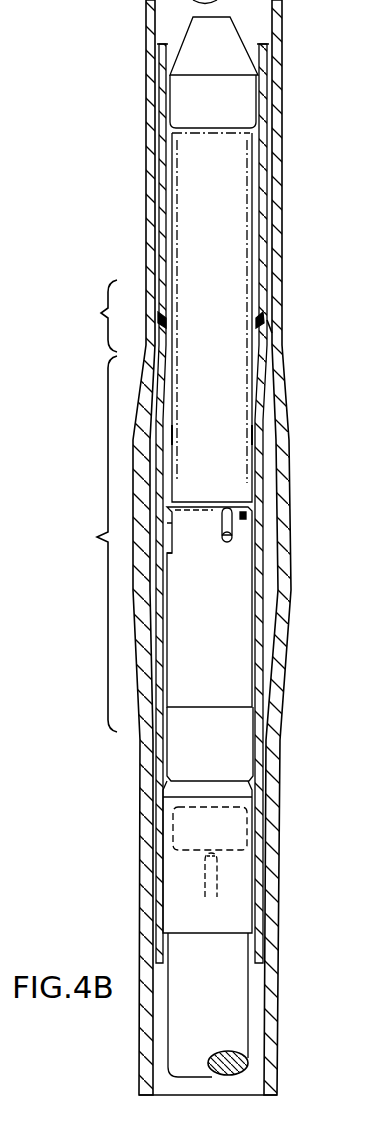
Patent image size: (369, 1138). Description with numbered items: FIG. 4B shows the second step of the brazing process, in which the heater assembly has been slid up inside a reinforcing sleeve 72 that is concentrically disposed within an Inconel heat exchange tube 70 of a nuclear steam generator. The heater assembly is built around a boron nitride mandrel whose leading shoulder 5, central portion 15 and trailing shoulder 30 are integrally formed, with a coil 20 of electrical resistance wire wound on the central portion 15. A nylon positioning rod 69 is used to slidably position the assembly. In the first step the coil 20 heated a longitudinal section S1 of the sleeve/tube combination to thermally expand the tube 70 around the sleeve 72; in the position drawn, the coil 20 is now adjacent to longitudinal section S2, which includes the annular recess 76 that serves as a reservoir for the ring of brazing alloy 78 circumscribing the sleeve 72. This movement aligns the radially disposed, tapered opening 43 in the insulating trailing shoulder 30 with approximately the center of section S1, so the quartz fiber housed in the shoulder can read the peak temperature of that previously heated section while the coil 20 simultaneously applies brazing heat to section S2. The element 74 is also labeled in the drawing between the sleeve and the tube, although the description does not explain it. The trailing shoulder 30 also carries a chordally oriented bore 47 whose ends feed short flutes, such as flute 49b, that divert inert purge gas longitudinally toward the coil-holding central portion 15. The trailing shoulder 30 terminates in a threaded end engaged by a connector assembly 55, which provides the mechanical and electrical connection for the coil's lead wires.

The leading shoulder 5 is at (218, 103).
The central portion 15 is at (222, 306).
The coil 20 is at (244, 435).
The trailing shoulder 30 is at (226, 629).
The tapered opening 43 is at (172, 540).
The chordally oriented bore 47 is at (232, 538).
The flute 49b is at (243, 517).
The connector assembly 55 is at (224, 761).
The nylon positioning rod 69 is at (224, 1001).
The heat exchange tube 70 is at (276, 192).
The reinforcing sleeve 72 is at (257, 133).
The liner sleeve 74 is at (266, 243).
The annular recess 76 is at (263, 313).
The ring of brazing alloy 78 is at (272, 333).
The longitudinal section S1 is at (89, 544).
The longitudinal section S2 is at (92, 316).